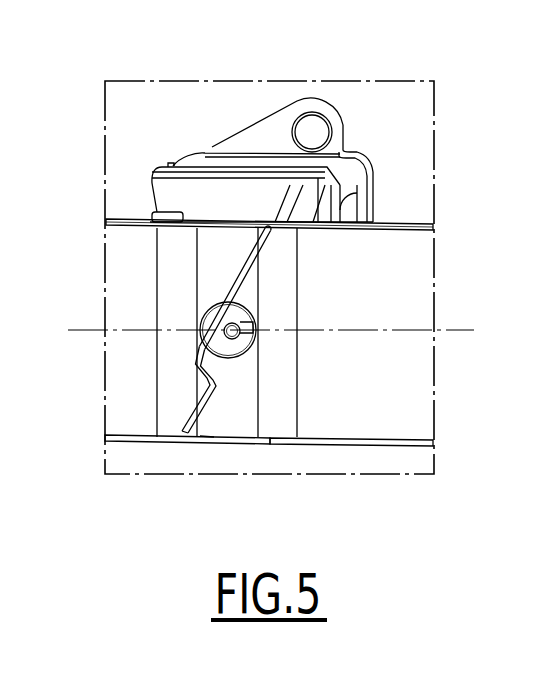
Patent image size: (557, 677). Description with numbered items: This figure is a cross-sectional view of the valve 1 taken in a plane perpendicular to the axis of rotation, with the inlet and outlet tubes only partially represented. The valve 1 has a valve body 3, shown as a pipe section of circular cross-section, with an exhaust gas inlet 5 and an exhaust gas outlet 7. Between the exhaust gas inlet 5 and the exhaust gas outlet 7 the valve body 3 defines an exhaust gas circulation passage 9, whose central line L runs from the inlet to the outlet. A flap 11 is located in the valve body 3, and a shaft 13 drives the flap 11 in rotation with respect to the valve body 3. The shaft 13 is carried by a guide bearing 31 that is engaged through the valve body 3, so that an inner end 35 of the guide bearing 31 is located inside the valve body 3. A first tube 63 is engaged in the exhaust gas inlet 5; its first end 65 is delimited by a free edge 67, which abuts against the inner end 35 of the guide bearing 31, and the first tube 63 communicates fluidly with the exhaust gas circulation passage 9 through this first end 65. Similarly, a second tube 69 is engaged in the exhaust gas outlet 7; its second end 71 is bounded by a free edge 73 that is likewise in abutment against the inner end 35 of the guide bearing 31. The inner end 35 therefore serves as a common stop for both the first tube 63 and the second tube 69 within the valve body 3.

The valve 1 is at (445, 72).
The valve body 3 is at (207, 442).
The exhaust gas inlet 5 is at (181, 228).
The exhaust gas outlet 7 is at (279, 226).
The exhaust gas circulation passage 9 is at (259, 266).
The flap 11 is at (242, 289).
The shaft 13 is at (226, 335).
The guide bearing 31 is at (207, 300).
The inner end 35 is at (238, 347).
The first tube 63 is at (113, 437).
The first end 65 is at (170, 420).
The free edge 67 is at (197, 263).
The second tube 69 is at (383, 438).
The second end 71 is at (282, 420).
The free edge 73 is at (255, 413).
The central line L is at (82, 331).